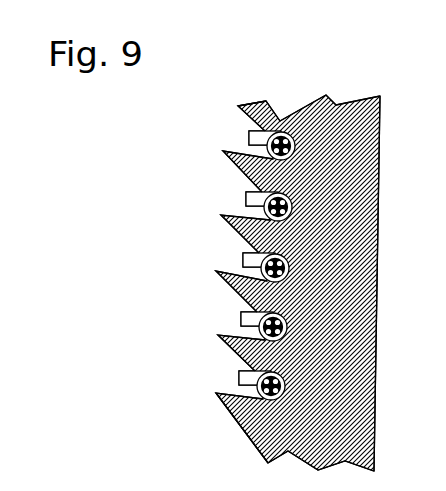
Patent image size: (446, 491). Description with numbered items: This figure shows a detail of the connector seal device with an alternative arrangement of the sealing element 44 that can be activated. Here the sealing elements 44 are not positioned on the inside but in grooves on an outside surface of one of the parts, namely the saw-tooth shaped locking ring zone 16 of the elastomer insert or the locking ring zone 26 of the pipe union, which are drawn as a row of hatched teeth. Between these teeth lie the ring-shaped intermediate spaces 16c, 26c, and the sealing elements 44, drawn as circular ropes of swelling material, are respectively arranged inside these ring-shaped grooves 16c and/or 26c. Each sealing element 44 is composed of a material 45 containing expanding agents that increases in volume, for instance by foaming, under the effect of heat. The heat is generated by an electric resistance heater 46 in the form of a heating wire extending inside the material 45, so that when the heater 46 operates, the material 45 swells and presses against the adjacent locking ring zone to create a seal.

The locking ring zones 16 is at (140, 207).
The locking ring zones 26 is at (233, 319).
The ring-shaped intermediate spaces 16c is at (233, 309).
The ring-shaped intermediate spaces 26c is at (232, 366).
The sealing element 44 is at (239, 191).
The material 45 is at (372, 150).
The electric resistance heater 46 is at (345, 248).